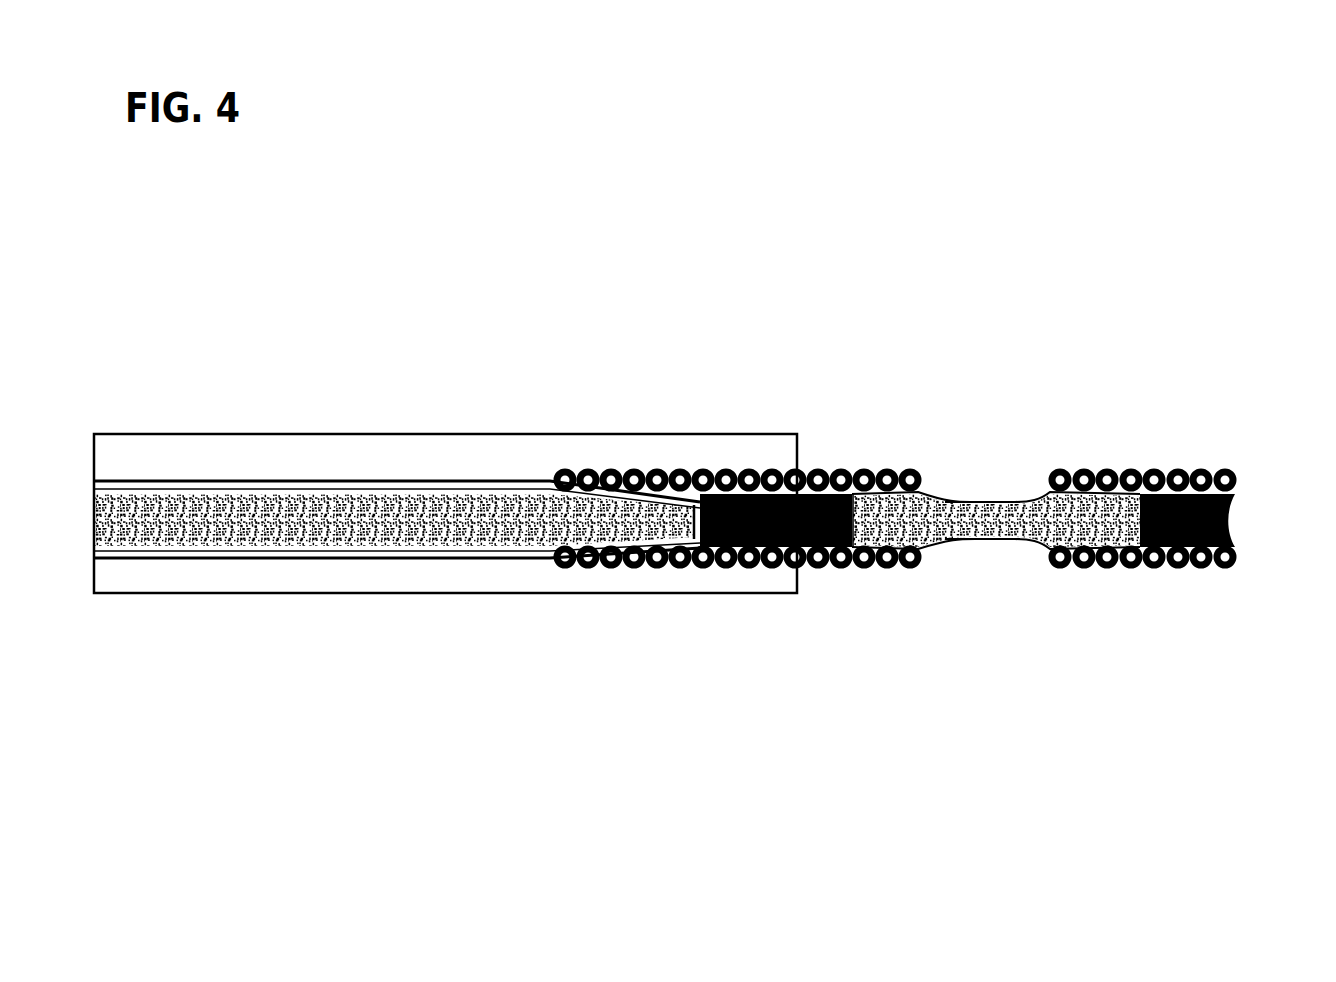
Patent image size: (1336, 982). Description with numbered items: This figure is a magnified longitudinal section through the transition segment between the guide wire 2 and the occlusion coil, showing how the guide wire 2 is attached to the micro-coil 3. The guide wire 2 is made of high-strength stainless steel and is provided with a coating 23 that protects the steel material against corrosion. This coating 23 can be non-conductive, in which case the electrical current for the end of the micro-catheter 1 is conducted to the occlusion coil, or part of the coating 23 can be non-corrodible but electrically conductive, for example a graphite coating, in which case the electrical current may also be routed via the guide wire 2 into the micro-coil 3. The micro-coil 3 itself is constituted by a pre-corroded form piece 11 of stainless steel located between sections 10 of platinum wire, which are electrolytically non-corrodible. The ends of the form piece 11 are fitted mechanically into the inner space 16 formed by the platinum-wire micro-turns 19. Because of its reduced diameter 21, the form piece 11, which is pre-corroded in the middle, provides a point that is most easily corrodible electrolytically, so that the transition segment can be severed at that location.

The micro-catheter 1 is at (272, 434).
The guide wire 2 is at (401, 495).
The micro-coil 3 is at (847, 470).
The sections of platinum wire 10 is at (810, 569).
The form piece 11 is at (944, 490).
The inner space 16 is at (1233, 516).
The platinum-wire micro-turns 19 is at (1176, 465).
The reduced diameter 21 is at (1004, 496).
The coating 23 is at (500, 476).